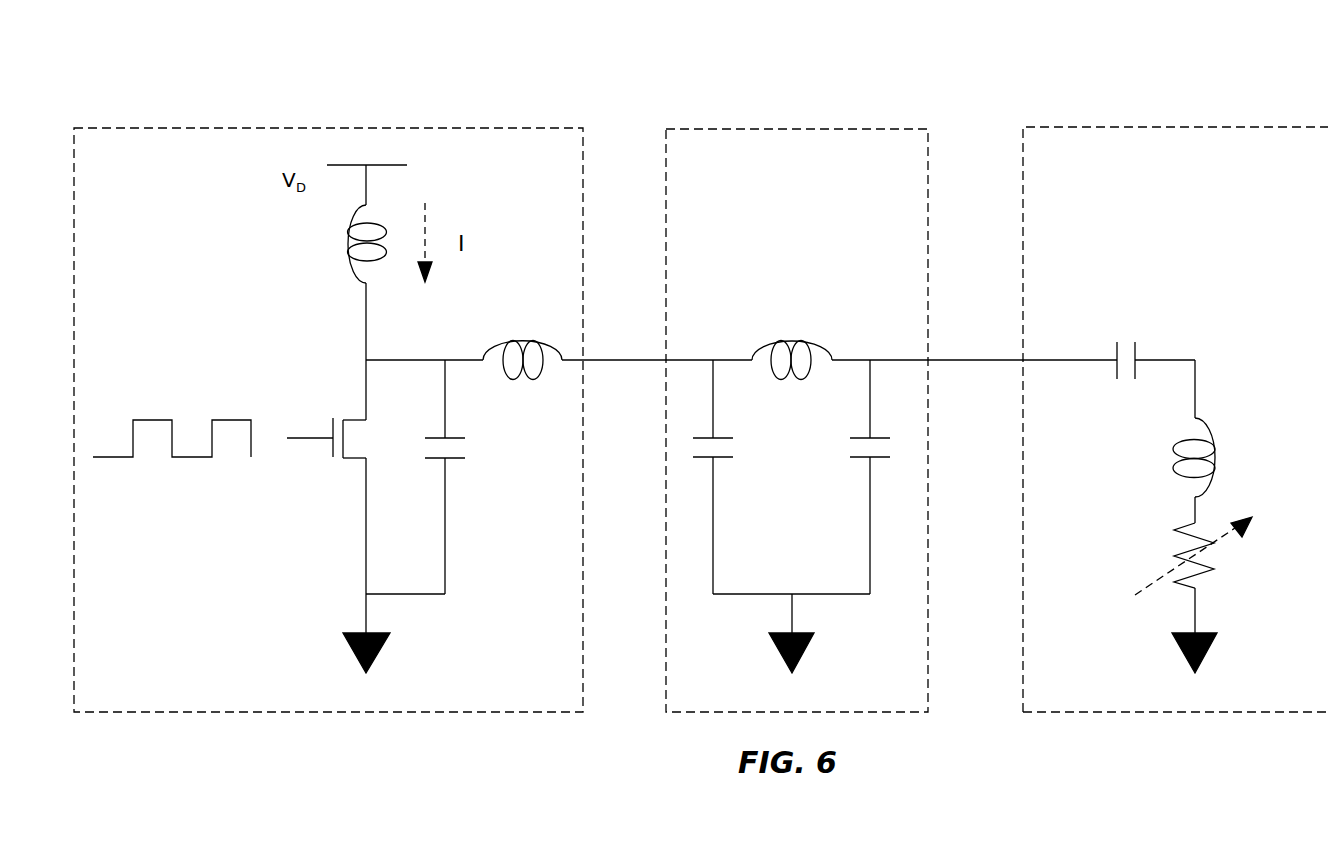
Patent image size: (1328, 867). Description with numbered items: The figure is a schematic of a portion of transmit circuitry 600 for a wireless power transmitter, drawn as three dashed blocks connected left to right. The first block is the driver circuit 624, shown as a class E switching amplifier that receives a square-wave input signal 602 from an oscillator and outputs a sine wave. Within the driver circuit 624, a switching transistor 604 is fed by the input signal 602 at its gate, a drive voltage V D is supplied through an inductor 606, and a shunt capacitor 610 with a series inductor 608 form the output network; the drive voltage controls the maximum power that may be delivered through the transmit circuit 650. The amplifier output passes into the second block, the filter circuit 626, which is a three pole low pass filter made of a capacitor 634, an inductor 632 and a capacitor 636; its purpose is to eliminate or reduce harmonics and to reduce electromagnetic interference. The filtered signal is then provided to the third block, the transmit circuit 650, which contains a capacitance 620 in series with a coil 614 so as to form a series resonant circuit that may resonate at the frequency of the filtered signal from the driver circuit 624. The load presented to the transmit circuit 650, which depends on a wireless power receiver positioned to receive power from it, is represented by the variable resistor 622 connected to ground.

The transmit circuitry 600 is at (215, 51).
The input signal 602 is at (148, 419).
The transistor 604 is at (355, 418).
The inductor 606 is at (347, 225).
The inductor 608 is at (523, 340).
The capacitor 610 is at (455, 437).
The coil 614 is at (1202, 418).
The capacitance 620 is at (1136, 352).
The variable resistor 622 is at (1185, 520).
The driver circuit 624 is at (442, 127).
The filter circuit 626 is at (858, 127).
The inductor 632 is at (813, 340).
The capacitor 634 is at (721, 438).
The capacitor 636 is at (878, 438).
The transmit circuit 650 is at (1245, 127).